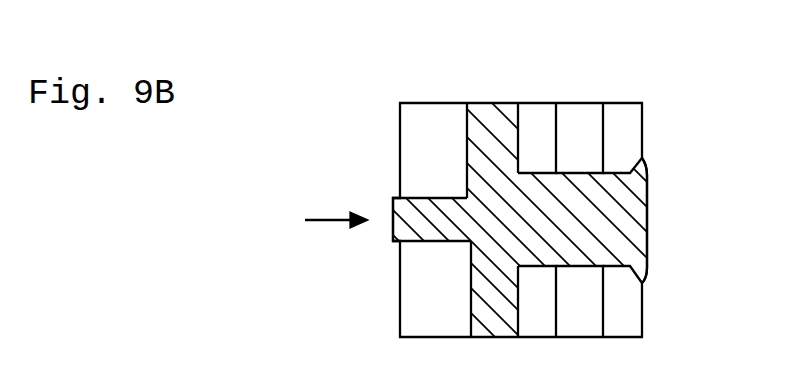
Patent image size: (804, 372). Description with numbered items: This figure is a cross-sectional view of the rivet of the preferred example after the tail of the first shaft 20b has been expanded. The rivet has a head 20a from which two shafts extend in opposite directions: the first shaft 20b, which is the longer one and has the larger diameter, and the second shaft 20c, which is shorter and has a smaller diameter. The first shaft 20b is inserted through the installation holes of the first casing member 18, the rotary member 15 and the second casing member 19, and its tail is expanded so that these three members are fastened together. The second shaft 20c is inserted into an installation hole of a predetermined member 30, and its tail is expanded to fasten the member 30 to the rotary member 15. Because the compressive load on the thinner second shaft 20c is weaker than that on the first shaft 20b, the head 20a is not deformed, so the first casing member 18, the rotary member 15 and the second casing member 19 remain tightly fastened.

The predetermined member 30 is at (427, 127).
The head 20a is at (492, 110).
The first shaft 20b is at (648, 198).
The second shaft 20c is at (424, 202).
The first casing member 18 is at (537, 118).
The rotary member 15 is at (580, 117).
The second casing member 19 is at (623, 117).